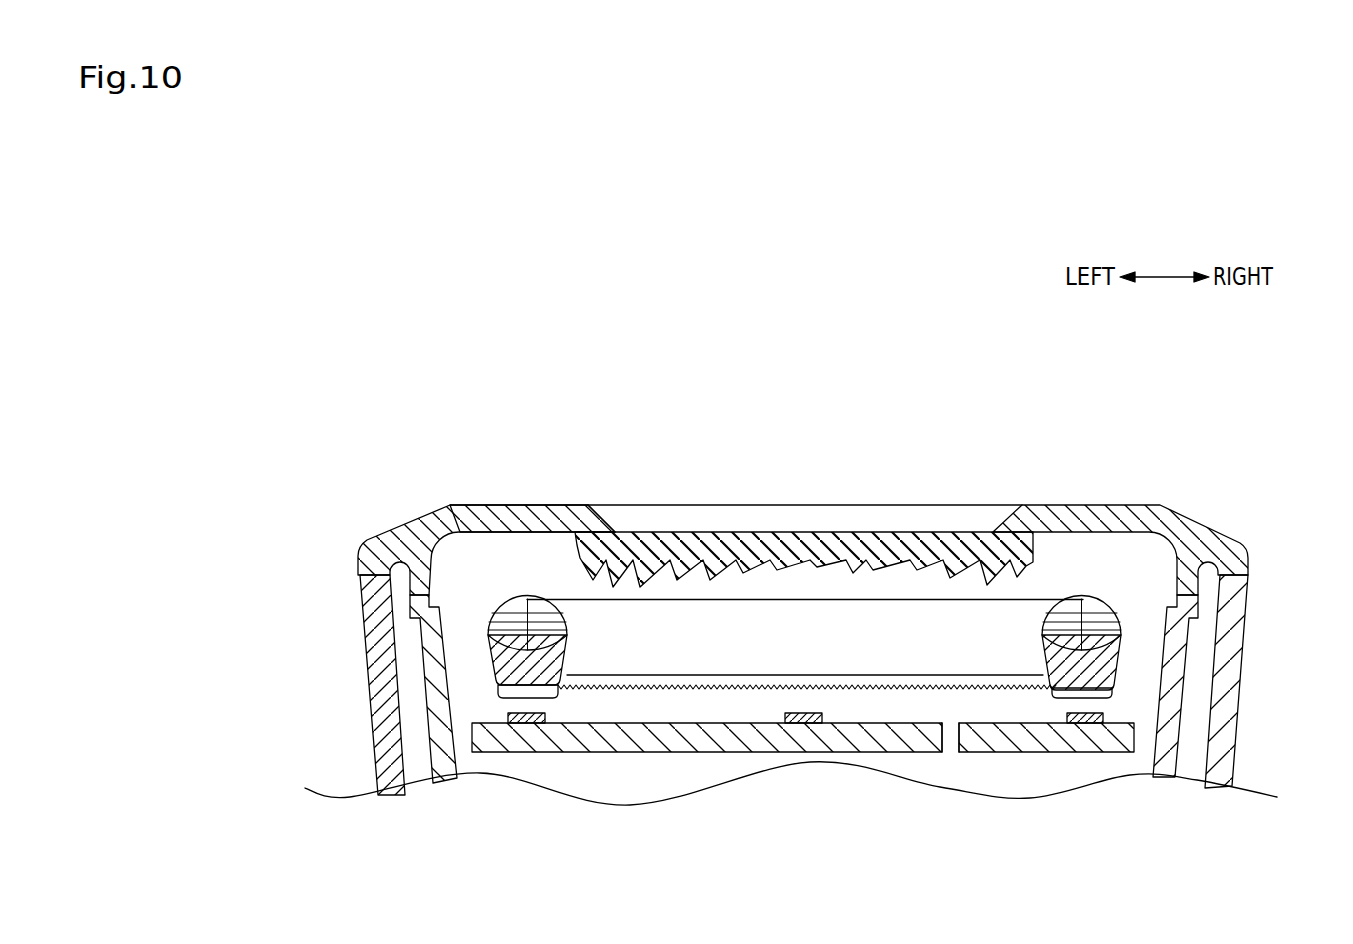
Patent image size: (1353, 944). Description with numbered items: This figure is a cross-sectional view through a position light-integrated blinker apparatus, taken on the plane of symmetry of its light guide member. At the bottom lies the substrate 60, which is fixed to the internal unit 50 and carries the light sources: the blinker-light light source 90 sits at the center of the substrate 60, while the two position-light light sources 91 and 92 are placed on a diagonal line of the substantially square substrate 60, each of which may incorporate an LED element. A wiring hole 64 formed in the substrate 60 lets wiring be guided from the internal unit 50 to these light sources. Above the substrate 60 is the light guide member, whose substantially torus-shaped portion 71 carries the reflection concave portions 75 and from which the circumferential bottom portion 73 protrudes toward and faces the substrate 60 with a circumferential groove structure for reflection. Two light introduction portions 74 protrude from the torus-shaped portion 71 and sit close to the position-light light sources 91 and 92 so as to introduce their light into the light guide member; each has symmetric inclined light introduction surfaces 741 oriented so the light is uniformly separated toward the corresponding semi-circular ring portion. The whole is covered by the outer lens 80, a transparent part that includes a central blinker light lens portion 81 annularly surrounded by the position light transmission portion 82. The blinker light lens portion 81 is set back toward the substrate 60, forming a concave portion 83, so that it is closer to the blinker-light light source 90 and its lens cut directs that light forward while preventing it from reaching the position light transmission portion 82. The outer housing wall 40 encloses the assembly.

The outer housing wall 40 is at (370, 587).
The internal unit 50 is at (428, 643).
The substrate 60 is at (665, 737).
The wiring hole 64 is at (950, 738).
The substantially torus-shaped portion 71 is at (997, 637).
The circumferential bottom portion 73 is at (1025, 687).
The light introduction portion 74 is at (520, 660).
The inclined light introduction surface 741 is at (523, 698).
The reflection concave portion 75 is at (527, 594).
The outer lens 80 is at (859, 505).
The blinker light lens portion 81 is at (787, 547).
The position light transmission portion 82 is at (530, 520).
The concave portion 83 is at (705, 519).
The blinker-light light source 90 is at (807, 724).
The position-light light source 91 is at (1082, 740).
The position-light light source 92 is at (523, 724).